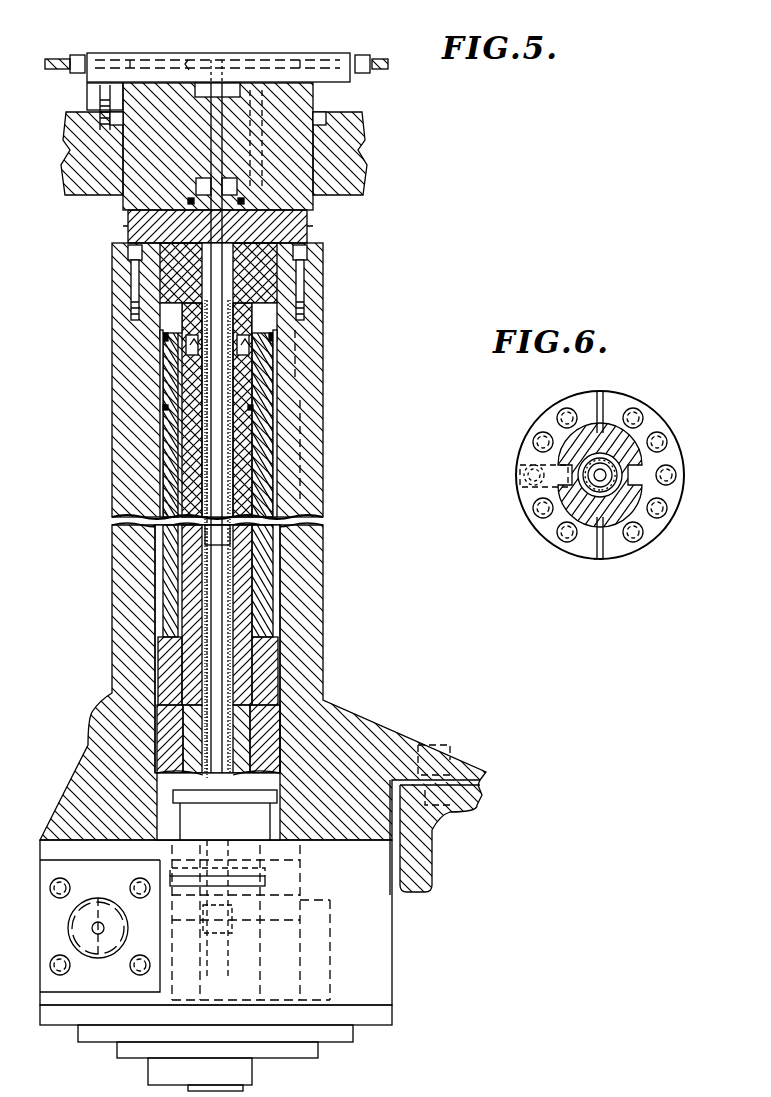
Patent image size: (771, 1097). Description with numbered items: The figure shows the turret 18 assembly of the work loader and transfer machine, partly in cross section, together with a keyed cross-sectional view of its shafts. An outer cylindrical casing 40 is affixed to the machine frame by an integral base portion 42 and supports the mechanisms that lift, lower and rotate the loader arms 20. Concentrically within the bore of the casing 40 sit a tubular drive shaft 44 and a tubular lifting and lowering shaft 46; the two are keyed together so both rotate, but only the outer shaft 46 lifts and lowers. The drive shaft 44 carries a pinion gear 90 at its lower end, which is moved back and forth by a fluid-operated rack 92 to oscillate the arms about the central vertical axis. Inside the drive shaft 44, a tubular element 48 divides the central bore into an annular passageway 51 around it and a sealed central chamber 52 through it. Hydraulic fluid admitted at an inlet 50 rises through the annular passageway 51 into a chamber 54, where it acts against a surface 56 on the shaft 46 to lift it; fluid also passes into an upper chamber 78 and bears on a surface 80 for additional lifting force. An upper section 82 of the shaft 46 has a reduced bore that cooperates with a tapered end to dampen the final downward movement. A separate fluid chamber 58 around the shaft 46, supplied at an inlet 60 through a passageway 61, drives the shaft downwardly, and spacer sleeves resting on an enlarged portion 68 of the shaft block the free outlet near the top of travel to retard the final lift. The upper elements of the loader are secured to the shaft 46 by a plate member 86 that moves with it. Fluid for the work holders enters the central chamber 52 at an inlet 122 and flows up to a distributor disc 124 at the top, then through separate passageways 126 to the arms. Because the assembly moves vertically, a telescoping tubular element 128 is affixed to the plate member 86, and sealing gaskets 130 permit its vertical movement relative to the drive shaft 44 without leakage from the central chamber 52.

In FIG. 5, the turret 18 is at (333, 410).
In FIG. 5, the loader arms 20 is at (68, 198).
In FIG. 5, the outer cylindrical casing 40 is at (317, 658).
In FIG. 5, the integral base portion 42 is at (377, 731).
In FIG. 5, the drive shaft 44 is at (253, 753).
In FIG. 6, the drive shaft 44 is at (590, 548).
In FIG. 5, the lifting and lowering shaft 46 is at (280, 717).
In FIG. 6, the lifting and lowering shaft 46 is at (620, 553).
In FIG. 5, the tubular element 48 is at (187, 687).
In FIG. 6, the tubular element 48 is at (594, 445).
In FIG. 5, the inlet 50 is at (173, 858).
In FIG. 5, the annular passageway 51 is at (205, 648).
In FIG. 5, the central chamber 52 is at (220, 100).
In FIG. 5, the chamber 54 is at (253, 348).
In FIG. 5, the surface 56 is at (250, 350).
In FIG. 5, the fluid chamber 58 is at (273, 500).
In FIG. 5, the inlet 60 is at (333, 885).
In FIG. 5, the passageway 61 is at (283, 783).
In FIG. 5, the enlarged portion 68 is at (273, 637).
In FIG. 5, the upper chamber 78 is at (310, 315).
In FIG. 5, the surface 80 is at (235, 297).
In FIG. 5, the upper section 82 is at (187, 307).
In FIG. 5, the plate member 86 is at (130, 232).
In FIG. 5, the pinion gear 90 is at (347, 937).
In FIG. 5, the rack 92 is at (95, 953).
In FIG. 5, the inlet 122 is at (217, 932).
In FIG. 5, the distributor disc 124 is at (268, 50).
In FIG. 5, the passageways 126 is at (125, 62).
In FIG. 5, the tubular element 128 is at (215, 447).
In FIG. 6, the tubular element 128 is at (590, 548).
In FIG. 5, the sealing gaskets 130 is at (185, 330).